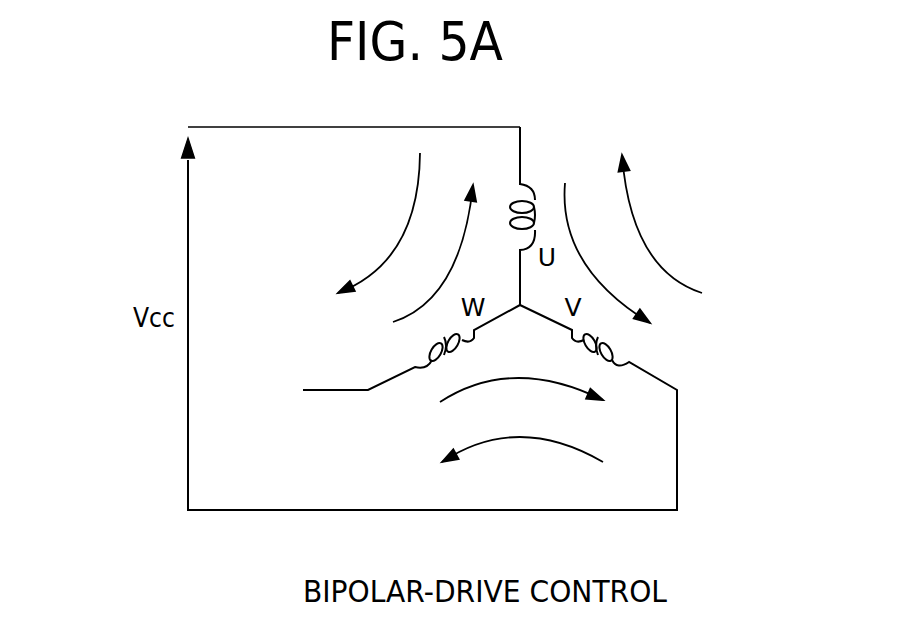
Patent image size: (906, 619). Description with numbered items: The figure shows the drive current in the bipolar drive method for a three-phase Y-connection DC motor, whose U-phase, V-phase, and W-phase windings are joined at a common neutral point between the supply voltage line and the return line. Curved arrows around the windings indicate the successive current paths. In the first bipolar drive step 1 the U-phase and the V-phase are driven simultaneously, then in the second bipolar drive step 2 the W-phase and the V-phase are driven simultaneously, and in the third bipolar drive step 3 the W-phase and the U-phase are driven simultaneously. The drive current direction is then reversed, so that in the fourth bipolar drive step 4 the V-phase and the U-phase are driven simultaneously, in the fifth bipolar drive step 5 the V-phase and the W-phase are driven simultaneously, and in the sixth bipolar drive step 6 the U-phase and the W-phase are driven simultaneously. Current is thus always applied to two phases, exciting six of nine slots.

The first bipolar drive step 1 is at (607, 253).
The second bipolar drive step 2 is at (521, 398).
The third bipolar drive step 3 is at (434, 253).
The fourth bipolar drive step 4 is at (661, 224).
The fifth bipolar drive step 5 is at (522, 457).
The sixth bipolar drive step 6 is at (379, 223).